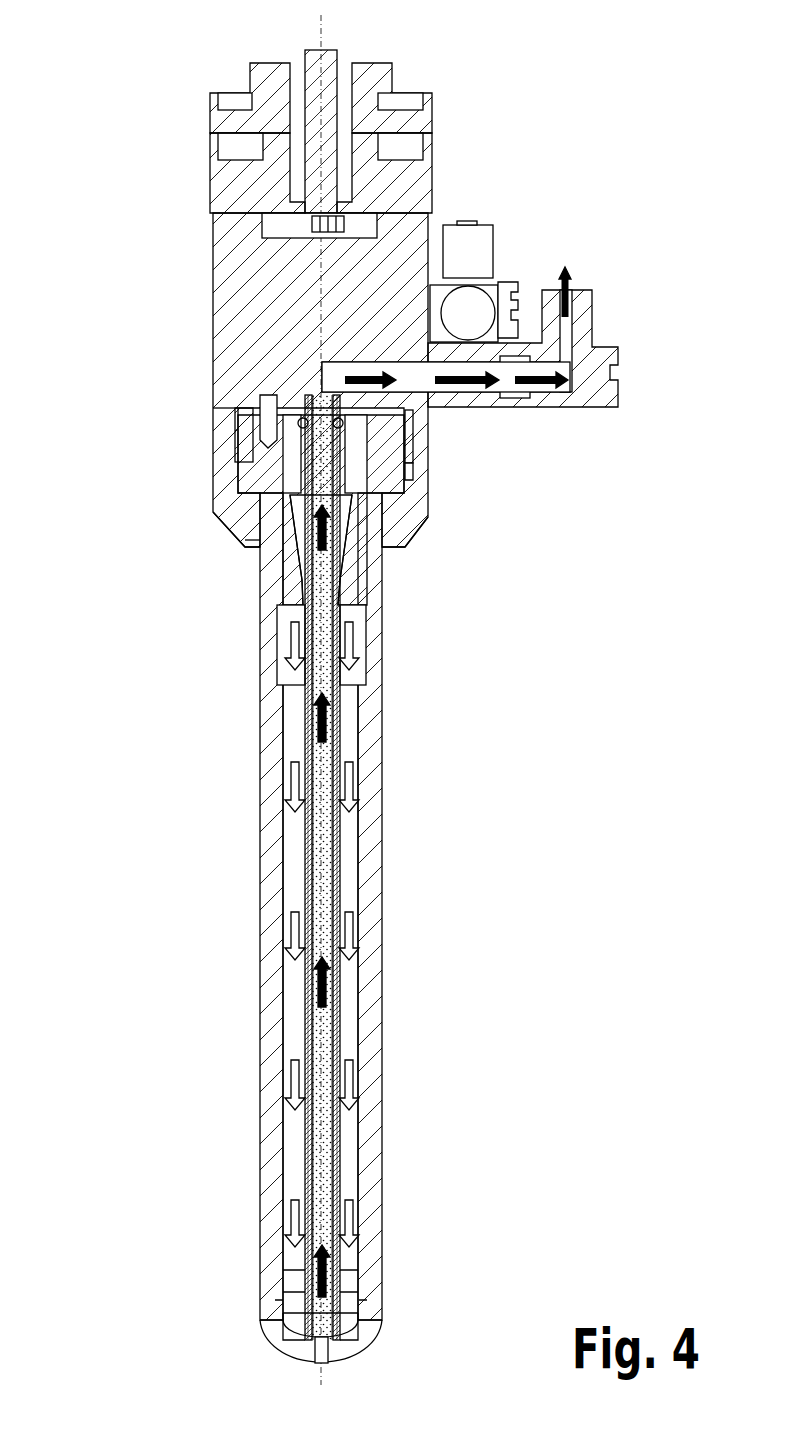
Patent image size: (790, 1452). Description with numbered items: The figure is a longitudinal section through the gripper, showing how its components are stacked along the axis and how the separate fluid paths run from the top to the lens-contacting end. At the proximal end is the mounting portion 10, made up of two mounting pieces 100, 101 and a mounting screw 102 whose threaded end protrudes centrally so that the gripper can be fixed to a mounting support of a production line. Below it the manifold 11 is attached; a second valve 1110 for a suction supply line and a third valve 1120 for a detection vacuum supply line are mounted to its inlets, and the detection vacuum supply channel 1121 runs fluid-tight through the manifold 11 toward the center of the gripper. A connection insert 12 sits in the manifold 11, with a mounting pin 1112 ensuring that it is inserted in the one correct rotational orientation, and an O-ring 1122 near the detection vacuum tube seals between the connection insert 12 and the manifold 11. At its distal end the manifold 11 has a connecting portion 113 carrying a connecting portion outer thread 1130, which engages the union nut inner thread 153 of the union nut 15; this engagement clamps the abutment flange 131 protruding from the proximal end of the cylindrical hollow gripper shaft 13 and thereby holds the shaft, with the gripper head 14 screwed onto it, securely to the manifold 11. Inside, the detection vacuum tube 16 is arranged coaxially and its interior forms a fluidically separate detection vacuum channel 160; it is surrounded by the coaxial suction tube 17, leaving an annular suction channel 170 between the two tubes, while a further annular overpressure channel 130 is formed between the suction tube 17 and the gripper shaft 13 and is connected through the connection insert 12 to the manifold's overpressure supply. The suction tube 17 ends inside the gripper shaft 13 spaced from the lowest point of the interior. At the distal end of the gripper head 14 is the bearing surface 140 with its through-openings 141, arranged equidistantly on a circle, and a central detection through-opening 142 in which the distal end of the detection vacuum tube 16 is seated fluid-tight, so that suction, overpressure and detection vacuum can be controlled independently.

The mounting portion 10 is at (193, 115).
The manifold 11 is at (245, 293).
The mounting piece 100 is at (222, 178).
The mounting piece 101 is at (415, 118).
The mounting screw 102 is at (325, 75).
The second valve 1110 is at (470, 242).
The third valve 1120 is at (600, 355).
The detection vacuum supply channel 1121 is at (325, 378).
The connection insert 12 is at (413, 532).
The connecting portion outer thread 1130 is at (413, 435).
The O-ring 1122 is at (340, 425).
The mounting pin 1112 is at (265, 432).
The connecting portion 113 is at (243, 445).
The union nut inner thread 153 is at (405, 453).
The union nut 15 is at (227, 500).
The abutment flange 131 is at (247, 537).
The gripper shaft 13 is at (373, 770).
The annular overpressure channel 130 is at (292, 738).
The suction tube 17 is at (338, 850).
The annular suction channel 170 is at (313, 898).
The detection vacuum tube 16 is at (328, 1038).
The detection vacuum channel 160 is at (322, 1025).
The gripper head 14 is at (377, 1313).
The through-opening 141 is at (288, 1327).
The detection through-opening 142 is at (333, 1353).
The bearing surface 140 is at (277, 1349).